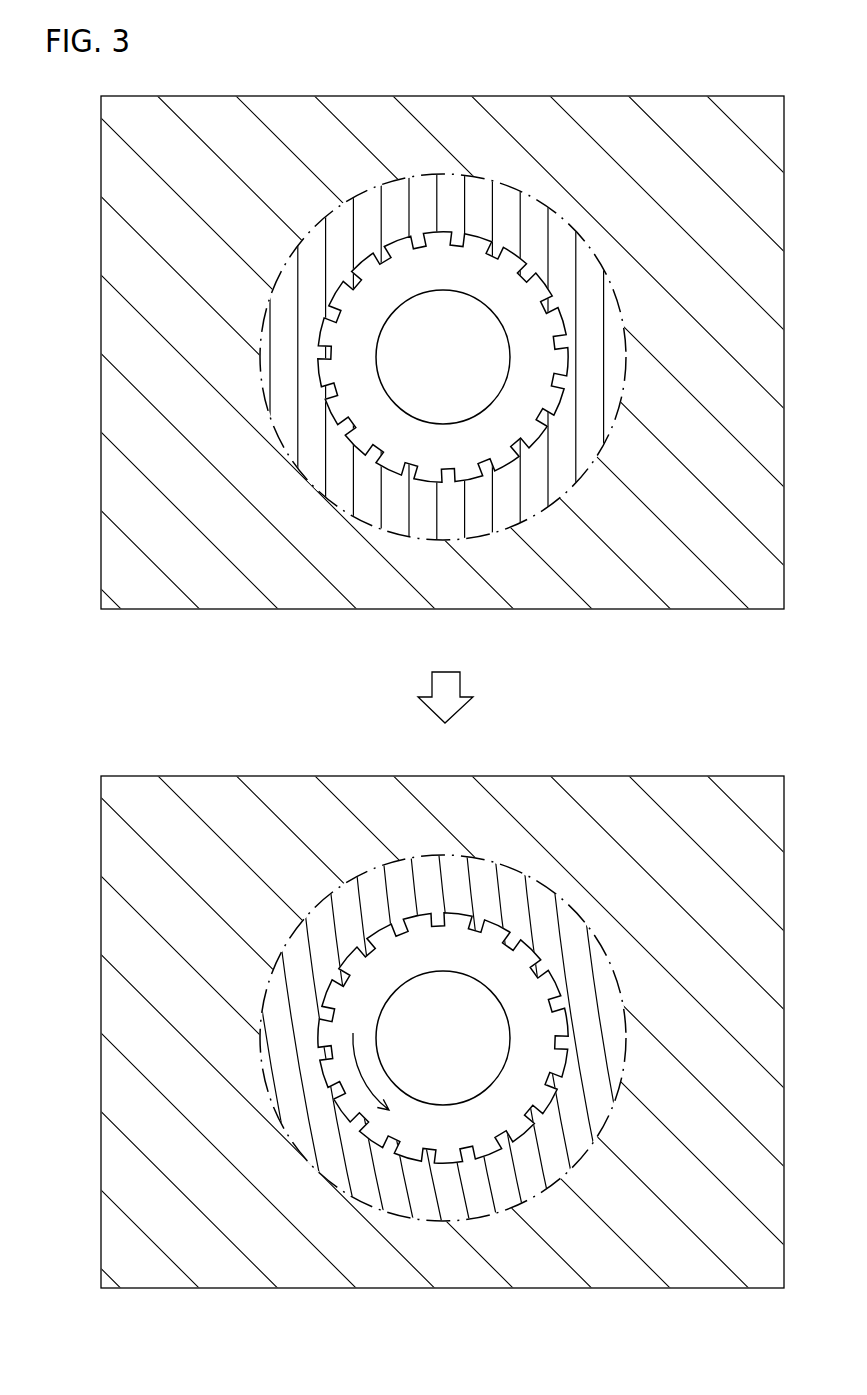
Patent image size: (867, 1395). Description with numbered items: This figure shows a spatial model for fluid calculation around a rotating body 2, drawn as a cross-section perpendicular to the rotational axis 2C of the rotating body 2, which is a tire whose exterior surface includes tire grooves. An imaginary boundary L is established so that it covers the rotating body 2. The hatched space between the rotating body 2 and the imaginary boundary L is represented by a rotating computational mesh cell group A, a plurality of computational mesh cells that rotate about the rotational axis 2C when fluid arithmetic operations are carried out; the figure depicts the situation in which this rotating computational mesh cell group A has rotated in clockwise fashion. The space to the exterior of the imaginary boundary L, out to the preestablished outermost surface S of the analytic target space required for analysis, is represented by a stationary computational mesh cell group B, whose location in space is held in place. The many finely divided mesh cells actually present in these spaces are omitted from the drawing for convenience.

The rotating body 2 is at (452, 278).
The rotational axis 2C is at (442, 358).
The rotating computational mesh cell group A is at (296, 378).
The stationary computational mesh cell group B is at (234, 378).
The imaginary boundary L is at (557, 498).
The outermost surface S is at (767, 609).